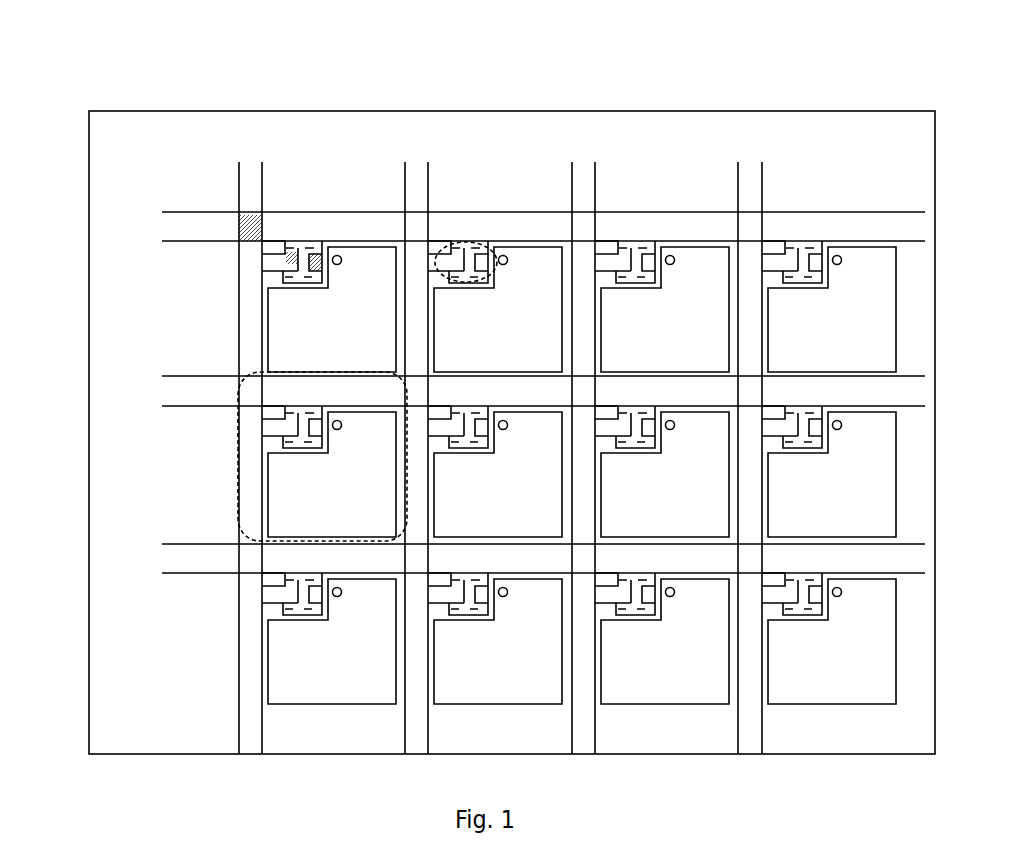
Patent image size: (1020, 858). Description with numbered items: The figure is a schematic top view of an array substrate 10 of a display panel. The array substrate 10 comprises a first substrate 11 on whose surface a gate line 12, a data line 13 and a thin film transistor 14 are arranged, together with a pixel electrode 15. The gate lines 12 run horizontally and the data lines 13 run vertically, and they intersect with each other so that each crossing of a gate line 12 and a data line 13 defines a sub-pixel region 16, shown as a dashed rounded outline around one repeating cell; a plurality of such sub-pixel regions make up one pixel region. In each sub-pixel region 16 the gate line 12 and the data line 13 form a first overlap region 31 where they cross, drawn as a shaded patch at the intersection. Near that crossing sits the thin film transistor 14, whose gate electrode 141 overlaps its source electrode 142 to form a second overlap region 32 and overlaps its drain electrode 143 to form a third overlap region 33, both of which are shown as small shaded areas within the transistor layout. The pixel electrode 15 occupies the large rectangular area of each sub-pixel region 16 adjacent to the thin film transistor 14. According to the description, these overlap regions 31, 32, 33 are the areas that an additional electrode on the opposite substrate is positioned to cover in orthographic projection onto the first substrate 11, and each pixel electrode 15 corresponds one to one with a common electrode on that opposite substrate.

The array substrate 10 is at (137, 45).
The first substrate 11 is at (475, 128).
The gate line 12 is at (182, 229).
The data line 13 is at (247, 182).
The thin film transistor 14 is at (466, 240).
The pixel electrode 15 is at (522, 273).
The sub-pixel region 16 is at (238, 462).
The first overlap region 31 is at (247, 217).
The second overlap region 32 is at (297, 255).
The third overlap region 33 is at (318, 259).
The gate electrode 141 is at (798, 250).
The source electrode 142 is at (626, 252).
The drain electrode 143 is at (650, 250).